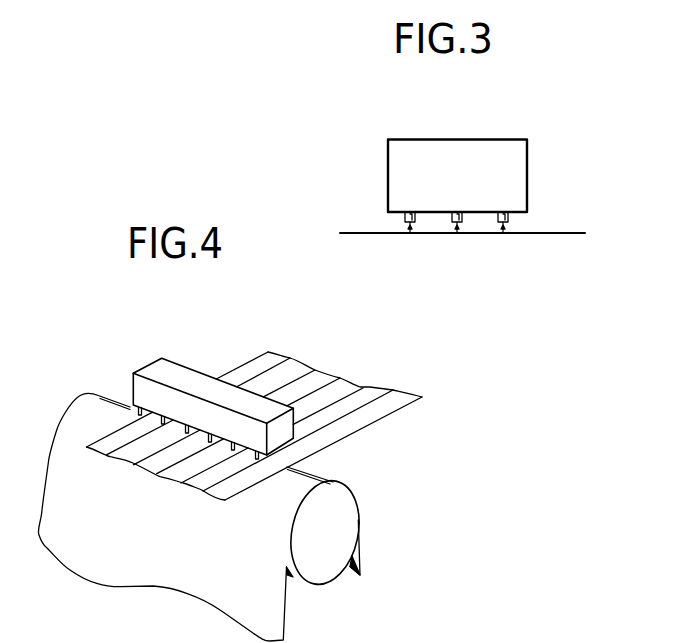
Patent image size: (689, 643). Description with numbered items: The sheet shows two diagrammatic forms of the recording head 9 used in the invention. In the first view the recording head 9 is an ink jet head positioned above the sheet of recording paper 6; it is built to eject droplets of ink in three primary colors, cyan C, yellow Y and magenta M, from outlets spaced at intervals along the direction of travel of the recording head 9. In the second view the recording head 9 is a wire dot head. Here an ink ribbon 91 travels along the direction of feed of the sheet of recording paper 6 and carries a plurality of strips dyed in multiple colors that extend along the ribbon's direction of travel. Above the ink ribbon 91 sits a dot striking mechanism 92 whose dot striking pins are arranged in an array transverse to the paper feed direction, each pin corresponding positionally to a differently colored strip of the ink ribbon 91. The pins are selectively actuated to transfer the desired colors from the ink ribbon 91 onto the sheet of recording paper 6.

In FIG. 3, the recording head 9 is at (400, 178).
In FIG. 4, the recording head 9 is at (161, 371).
In FIG. 3, the sheet of recording paper 6 is at (558, 232).
In FIG. 4, the sheet of recording paper 6 is at (352, 555).
In FIG. 4, the ink ribbon 91 is at (357, 416).
In FIG. 4, the dot striking mechanism 92 is at (147, 388).
In FIG. 3, the cyan C is at (412, 231).
In FIG. 3, the yellow Y is at (458, 231).
In FIG. 3, the magenta M is at (510, 232).